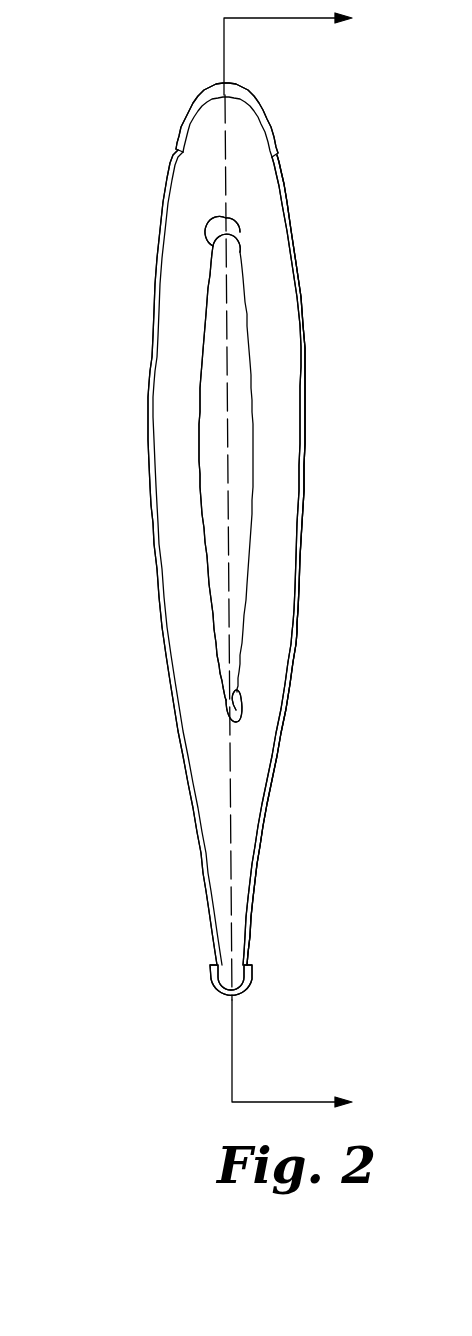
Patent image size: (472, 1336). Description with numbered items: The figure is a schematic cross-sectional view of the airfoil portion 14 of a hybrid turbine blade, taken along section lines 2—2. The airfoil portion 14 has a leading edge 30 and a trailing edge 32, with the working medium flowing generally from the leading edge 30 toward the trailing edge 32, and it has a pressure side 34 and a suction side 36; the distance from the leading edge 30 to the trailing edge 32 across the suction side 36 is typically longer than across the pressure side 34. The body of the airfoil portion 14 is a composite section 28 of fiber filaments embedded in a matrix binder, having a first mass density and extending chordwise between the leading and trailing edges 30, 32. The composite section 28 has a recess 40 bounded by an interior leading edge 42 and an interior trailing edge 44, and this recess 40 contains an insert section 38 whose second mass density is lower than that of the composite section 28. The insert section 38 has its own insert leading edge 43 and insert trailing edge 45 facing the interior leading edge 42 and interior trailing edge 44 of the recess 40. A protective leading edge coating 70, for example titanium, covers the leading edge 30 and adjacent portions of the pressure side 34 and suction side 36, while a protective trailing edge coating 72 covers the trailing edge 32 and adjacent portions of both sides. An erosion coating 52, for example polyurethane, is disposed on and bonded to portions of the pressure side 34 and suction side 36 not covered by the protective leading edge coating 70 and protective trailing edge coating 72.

The section lines 2— 2 is at (304, 562).
The airfoil portion 14 is at (138, 605).
The composite section 28 is at (288, 424).
The leading edge 30 is at (262, 108).
The trailing edge 32 is at (240, 980).
The pressure side 34 is at (295, 578).
The suction side 36 is at (156, 496).
The insert section 38 is at (218, 292).
The recess 40 is at (203, 425).
The interior leading edge 42 is at (238, 250).
The insert leading edge 43 is at (242, 222).
The interior trailing edge 44 is at (230, 718).
The insert trailing edge 45 is at (226, 698).
The erosion coating 52 is at (152, 337).
The protective leading edge coating 70 is at (206, 100).
The protective trailing edge coating 72 is at (215, 978).